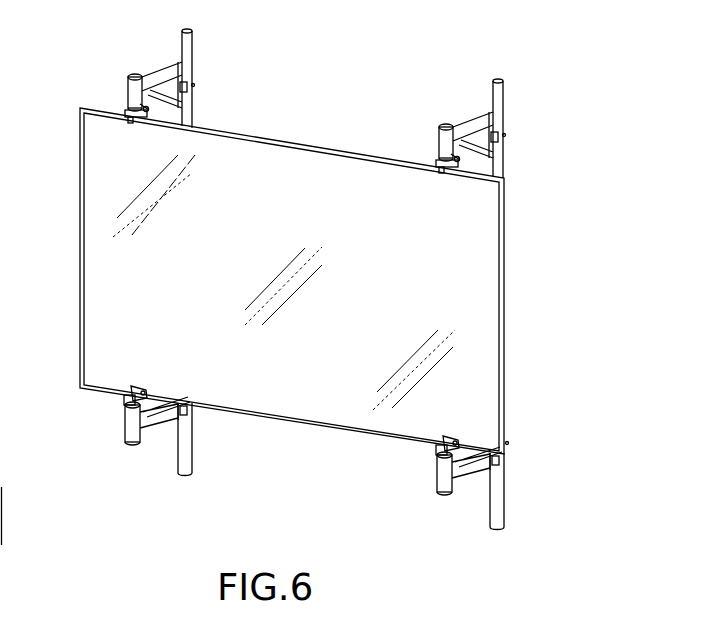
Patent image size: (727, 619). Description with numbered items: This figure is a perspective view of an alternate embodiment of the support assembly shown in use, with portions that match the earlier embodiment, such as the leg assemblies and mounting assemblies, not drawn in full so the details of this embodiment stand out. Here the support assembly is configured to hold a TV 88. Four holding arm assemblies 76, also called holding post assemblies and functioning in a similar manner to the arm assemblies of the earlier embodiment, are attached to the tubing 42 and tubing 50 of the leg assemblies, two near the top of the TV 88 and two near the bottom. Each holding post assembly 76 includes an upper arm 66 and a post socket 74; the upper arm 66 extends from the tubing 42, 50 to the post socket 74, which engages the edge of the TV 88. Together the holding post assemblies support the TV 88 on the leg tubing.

The tubing 42 is at (187, 455).
The tubing 50 is at (187, 50).
The upper arm 66 is at (169, 60).
The post socket 74 is at (132, 90).
The holding arm assembly 76 is at (108, 103).
The TV 88 is at (93, 250).